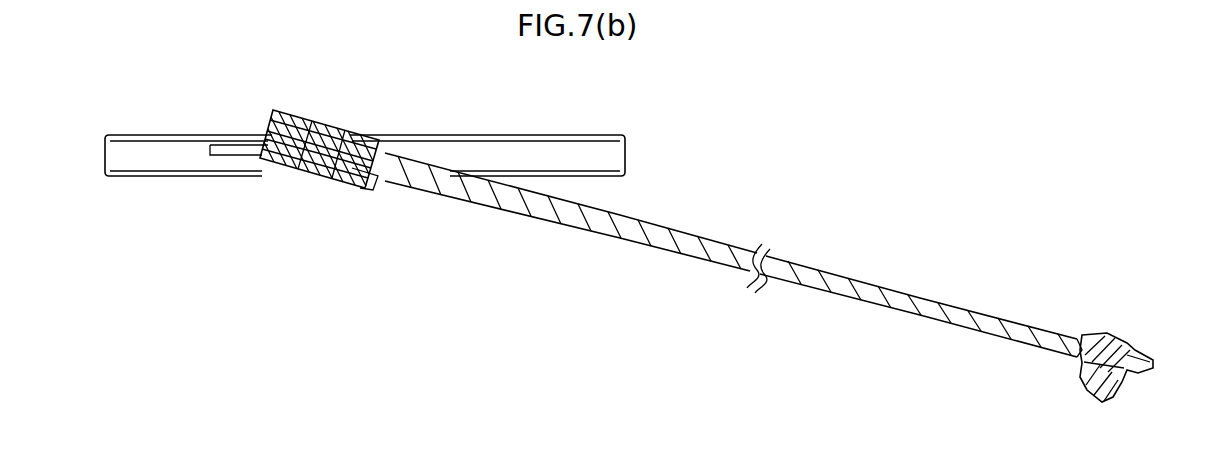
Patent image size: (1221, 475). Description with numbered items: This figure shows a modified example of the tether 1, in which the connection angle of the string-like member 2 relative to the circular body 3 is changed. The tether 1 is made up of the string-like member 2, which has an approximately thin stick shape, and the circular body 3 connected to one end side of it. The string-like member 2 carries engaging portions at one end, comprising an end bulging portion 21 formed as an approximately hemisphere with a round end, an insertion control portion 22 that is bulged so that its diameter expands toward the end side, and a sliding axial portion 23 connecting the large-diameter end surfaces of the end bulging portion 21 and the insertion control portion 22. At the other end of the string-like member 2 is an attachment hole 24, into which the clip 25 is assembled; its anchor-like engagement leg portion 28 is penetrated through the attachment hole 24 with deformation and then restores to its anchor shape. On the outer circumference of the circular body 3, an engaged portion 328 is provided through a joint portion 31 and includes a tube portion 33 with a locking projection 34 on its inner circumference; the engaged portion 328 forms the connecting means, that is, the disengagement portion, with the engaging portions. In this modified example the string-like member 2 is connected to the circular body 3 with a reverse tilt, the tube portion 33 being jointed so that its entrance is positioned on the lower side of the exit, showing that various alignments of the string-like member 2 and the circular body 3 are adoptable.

The tether 1 is at (765, 105).
The string-like member 2 is at (668, 229).
The circular body 3 is at (628, 151).
The end bulging portion 21 is at (277, 140).
The insertion control portion 22 is at (358, 165).
The sliding axial portion 23 is at (316, 122).
The attachment hole 24 is at (1077, 353).
The clip 25 is at (1110, 335).
The engagement leg portion 28 is at (1115, 402).
The joint portion 31 is at (228, 147).
The tube portion 33 is at (290, 173).
The locking projection 34 is at (318, 178).
The engaged portion 328 is at (355, 122).